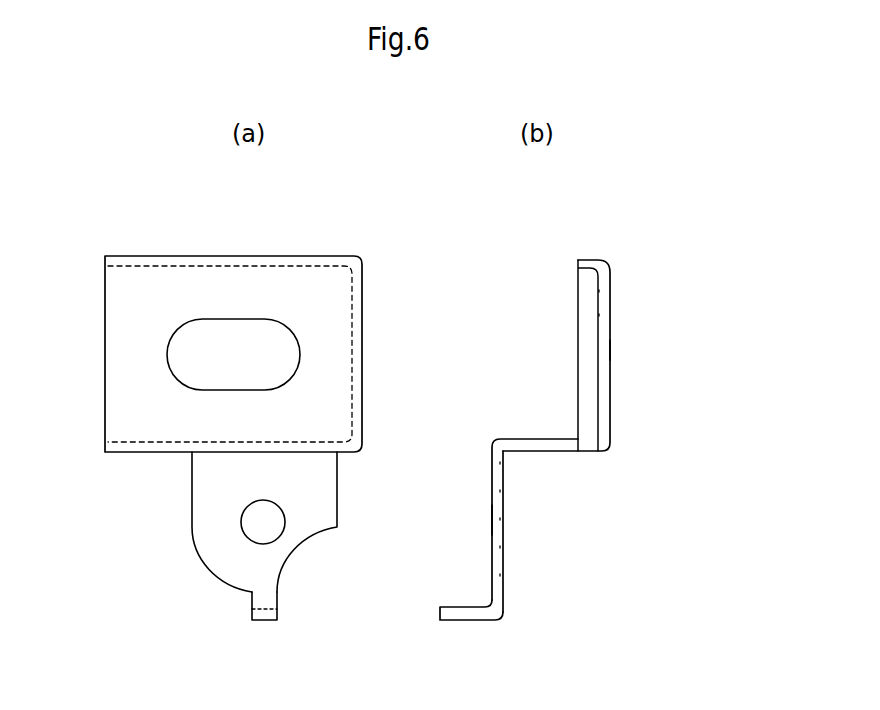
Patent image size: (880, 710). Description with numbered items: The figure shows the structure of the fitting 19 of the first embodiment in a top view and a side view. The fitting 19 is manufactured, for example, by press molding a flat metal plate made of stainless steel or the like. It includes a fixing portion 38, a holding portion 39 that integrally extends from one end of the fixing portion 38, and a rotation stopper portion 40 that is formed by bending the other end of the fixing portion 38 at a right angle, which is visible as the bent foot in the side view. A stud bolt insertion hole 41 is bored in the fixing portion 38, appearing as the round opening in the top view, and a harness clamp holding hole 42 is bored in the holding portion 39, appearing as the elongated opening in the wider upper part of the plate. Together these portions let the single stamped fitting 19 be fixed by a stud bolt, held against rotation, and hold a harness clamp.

The fitting 19 is at (207, 256).
The fixing portion 38 is at (220, 495).
The holding portion 39 is at (252, 250).
The rotation stopper portion 40 is at (265, 615).
The stud bolt insertion hole 41 is at (263, 522).
The harness clamp holding hole 42 is at (238, 362).